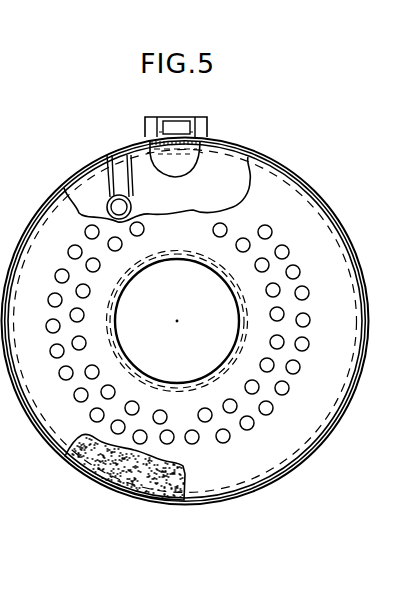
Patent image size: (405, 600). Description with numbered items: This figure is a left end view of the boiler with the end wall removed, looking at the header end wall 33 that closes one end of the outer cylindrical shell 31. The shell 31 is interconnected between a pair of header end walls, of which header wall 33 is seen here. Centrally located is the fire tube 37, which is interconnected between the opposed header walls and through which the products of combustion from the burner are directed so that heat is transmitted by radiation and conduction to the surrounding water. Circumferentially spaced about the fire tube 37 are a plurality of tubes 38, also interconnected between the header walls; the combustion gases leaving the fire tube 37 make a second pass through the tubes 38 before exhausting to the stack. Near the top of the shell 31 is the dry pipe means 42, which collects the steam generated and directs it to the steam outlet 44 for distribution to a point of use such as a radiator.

The outer cylindrical shell 31 is at (88, 158).
The header end wall 33 is at (273, 203).
The fire tube 37 is at (168, 266).
The tubes 38 is at (309, 293).
The dry pipe means 42 is at (188, 165).
The steam outlet 44 is at (146, 125).